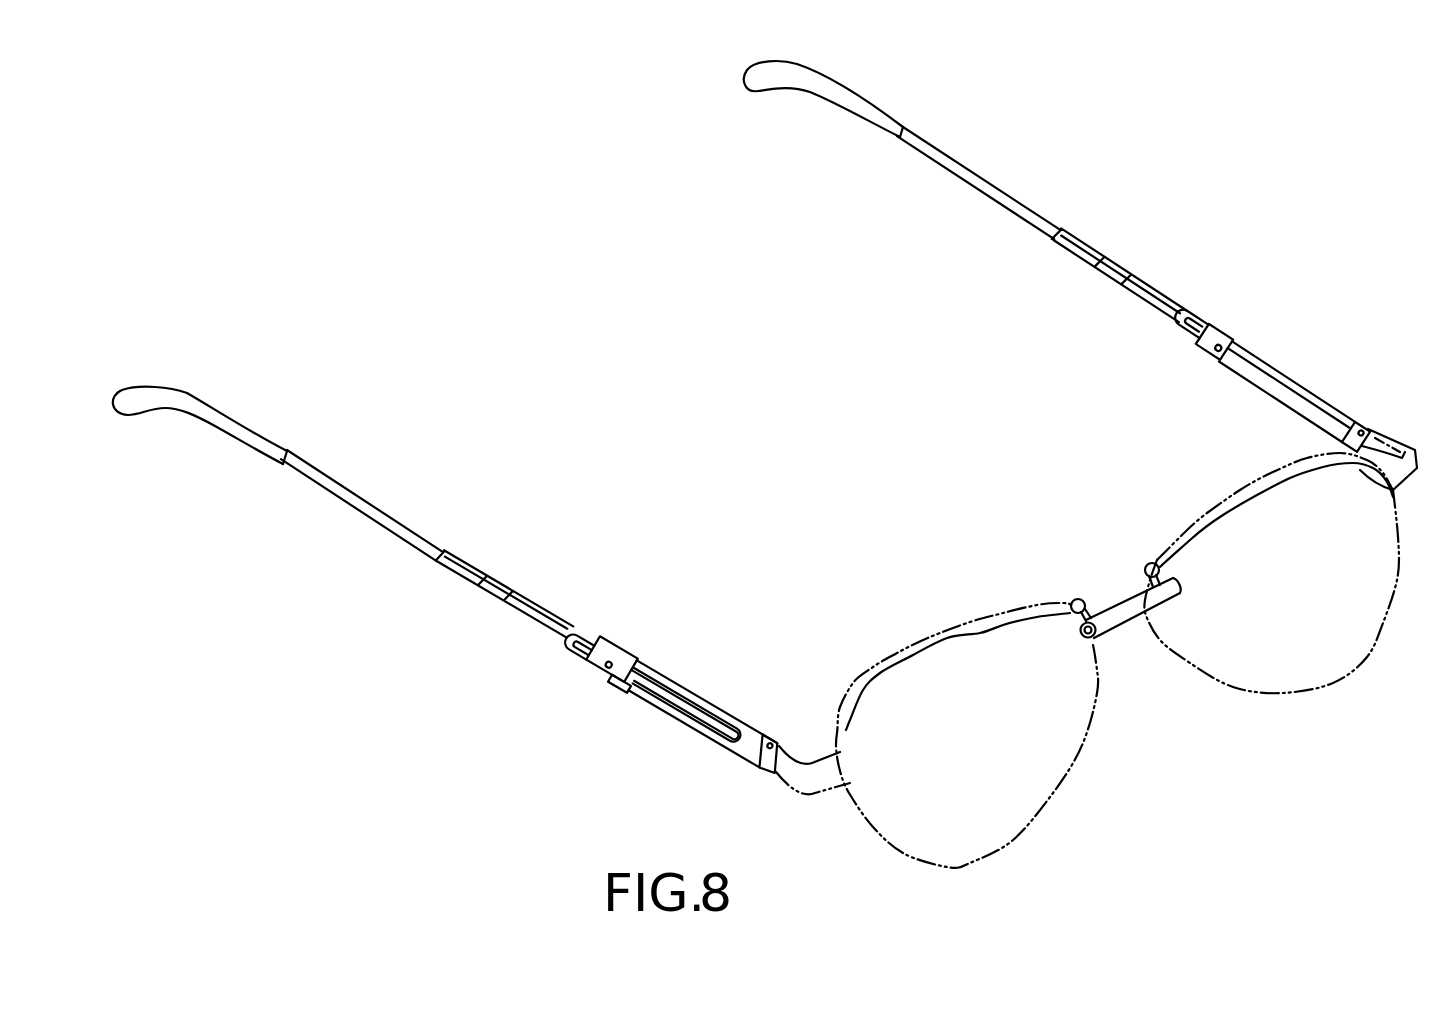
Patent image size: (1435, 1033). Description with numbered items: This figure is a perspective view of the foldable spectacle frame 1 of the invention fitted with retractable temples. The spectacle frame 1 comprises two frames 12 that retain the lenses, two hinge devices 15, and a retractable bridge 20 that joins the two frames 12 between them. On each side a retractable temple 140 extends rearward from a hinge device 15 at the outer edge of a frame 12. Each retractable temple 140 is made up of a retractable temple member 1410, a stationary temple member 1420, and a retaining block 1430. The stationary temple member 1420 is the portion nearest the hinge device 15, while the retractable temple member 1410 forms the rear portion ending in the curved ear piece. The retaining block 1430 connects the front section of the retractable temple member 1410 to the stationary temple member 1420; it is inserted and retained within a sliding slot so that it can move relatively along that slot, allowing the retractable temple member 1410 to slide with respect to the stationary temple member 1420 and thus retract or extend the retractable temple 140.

The spectacle frame 1 is at (1096, 648).
The frame 12 is at (912, 650).
The hinge device 15 is at (776, 739).
The retractable bridge 20 is at (1102, 576).
The retractable temple 140 is at (771, 432).
The retractable temple member 1410 is at (1022, 194).
The stationary temple member 1420 is at (1304, 392).
The retaining block 1430 is at (617, 676).